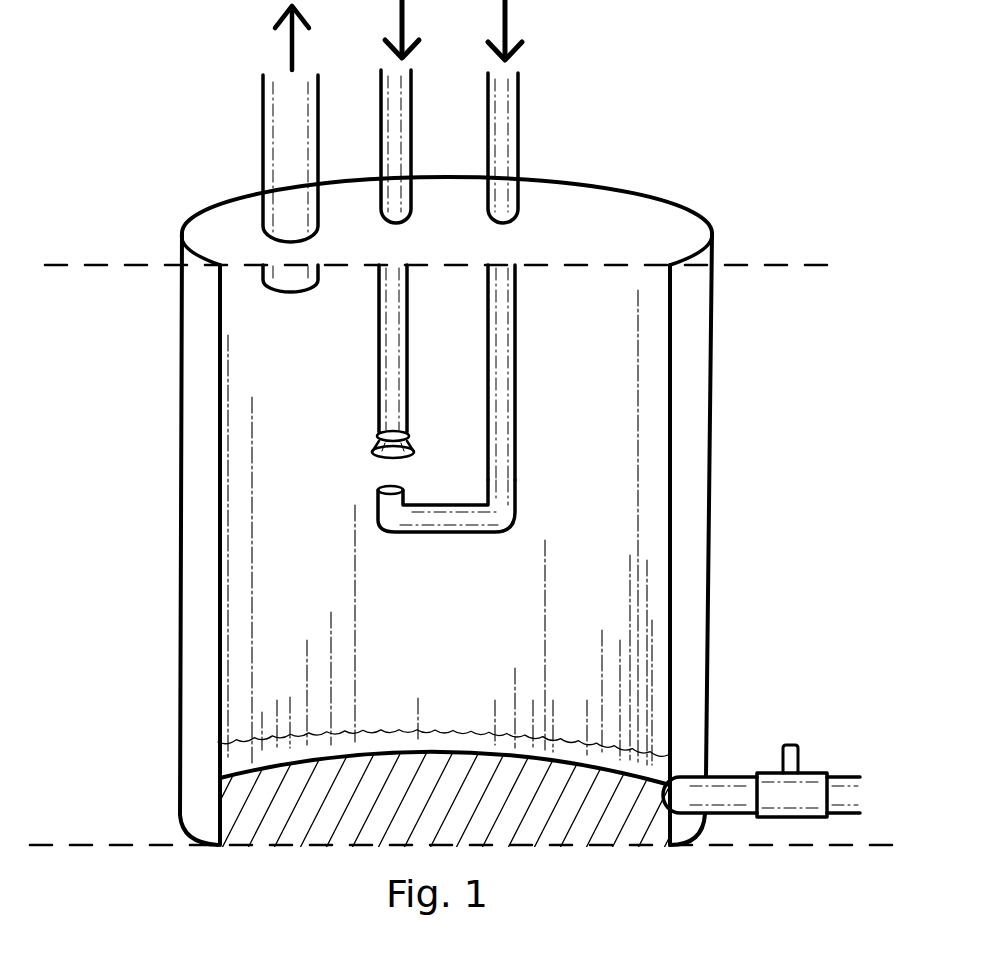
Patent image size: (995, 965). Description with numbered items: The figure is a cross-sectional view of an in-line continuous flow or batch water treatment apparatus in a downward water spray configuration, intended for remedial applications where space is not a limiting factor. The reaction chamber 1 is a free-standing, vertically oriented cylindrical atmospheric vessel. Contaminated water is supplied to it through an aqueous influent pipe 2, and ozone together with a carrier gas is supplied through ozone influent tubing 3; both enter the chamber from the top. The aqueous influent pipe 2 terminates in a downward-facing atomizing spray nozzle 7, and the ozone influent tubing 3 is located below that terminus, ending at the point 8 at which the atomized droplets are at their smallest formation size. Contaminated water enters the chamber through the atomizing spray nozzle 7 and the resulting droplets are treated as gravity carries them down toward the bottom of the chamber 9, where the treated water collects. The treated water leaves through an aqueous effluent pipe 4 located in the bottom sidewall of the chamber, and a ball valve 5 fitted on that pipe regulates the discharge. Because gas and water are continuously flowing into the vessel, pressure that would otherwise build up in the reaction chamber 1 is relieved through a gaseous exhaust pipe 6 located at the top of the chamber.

The reaction chamber 1 is at (590, 202).
The aqueous influent pipe 2 is at (397, 83).
The ozone influent tubing 3 is at (497, 88).
The aqueous effluent pipe 4 is at (724, 790).
The ball valve 5 is at (797, 786).
The gaseous exhaust pipe 6 is at (282, 98).
The atomizing spray nozzle 7 is at (378, 441).
The point of smallest droplet formation size 8 is at (380, 488).
The bottom of the chamber 9 is at (265, 733).